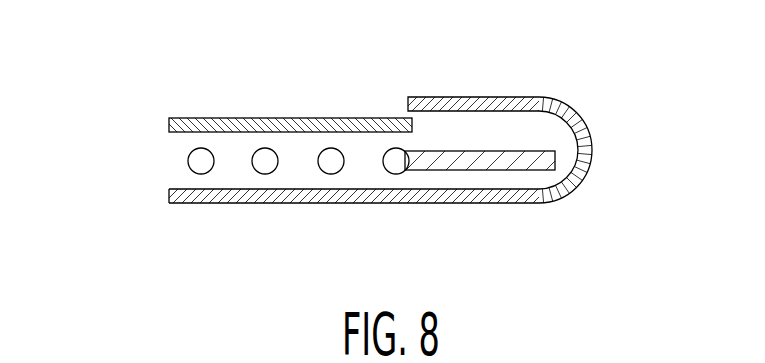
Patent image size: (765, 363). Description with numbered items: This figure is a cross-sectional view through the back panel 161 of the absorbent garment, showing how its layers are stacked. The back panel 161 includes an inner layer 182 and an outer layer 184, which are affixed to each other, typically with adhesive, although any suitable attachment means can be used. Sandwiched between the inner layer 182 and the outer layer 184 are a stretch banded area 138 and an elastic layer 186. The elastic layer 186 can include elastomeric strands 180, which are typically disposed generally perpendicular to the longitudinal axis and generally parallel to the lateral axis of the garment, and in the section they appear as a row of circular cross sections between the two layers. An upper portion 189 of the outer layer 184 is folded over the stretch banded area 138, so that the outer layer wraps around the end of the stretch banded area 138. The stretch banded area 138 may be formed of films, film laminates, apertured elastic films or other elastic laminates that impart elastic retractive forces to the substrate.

The back panel 161 is at (343, 87).
The inner layer 182 is at (168, 128).
The outer layer 184 is at (168, 196).
The elastic layer 186 is at (157, 160).
The elastomeric strands 180 is at (325, 174).
The upper portion of the outer layer 189 is at (497, 97).
The stretch banded area 138 is at (542, 153).